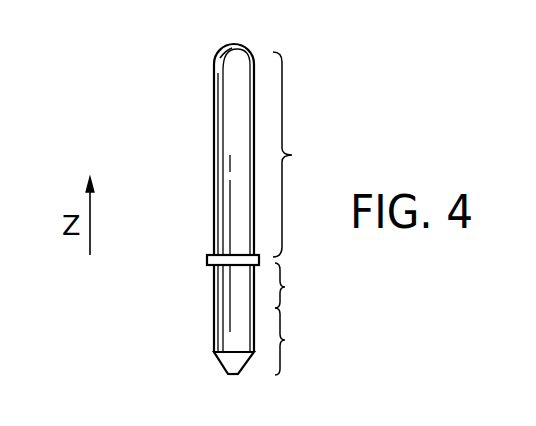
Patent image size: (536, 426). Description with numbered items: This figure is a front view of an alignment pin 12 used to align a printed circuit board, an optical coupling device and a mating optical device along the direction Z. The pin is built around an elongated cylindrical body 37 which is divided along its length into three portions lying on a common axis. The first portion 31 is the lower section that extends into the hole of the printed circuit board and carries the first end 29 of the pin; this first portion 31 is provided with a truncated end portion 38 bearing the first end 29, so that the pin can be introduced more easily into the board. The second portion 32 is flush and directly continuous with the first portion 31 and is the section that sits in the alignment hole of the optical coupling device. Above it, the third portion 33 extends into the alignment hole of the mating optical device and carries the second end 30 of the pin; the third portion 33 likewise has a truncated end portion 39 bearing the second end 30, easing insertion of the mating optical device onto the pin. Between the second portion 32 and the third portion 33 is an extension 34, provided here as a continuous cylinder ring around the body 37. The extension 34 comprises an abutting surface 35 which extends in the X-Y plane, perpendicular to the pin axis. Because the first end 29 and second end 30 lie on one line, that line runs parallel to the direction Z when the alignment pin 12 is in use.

The alignment pin 12 is at (122, 127).
The first end 29 is at (233, 375).
The second end 30 is at (237, 45).
The first portion 31 is at (300, 341).
The second portion 32 is at (300, 285).
The third portion 33 is at (302, 154).
The extension 34 is at (210, 256).
The abutting surface 35 is at (208, 267).
The body 37 is at (219, 133).
The truncated end portion 38 is at (240, 363).
The truncated end portion 39 is at (222, 55).